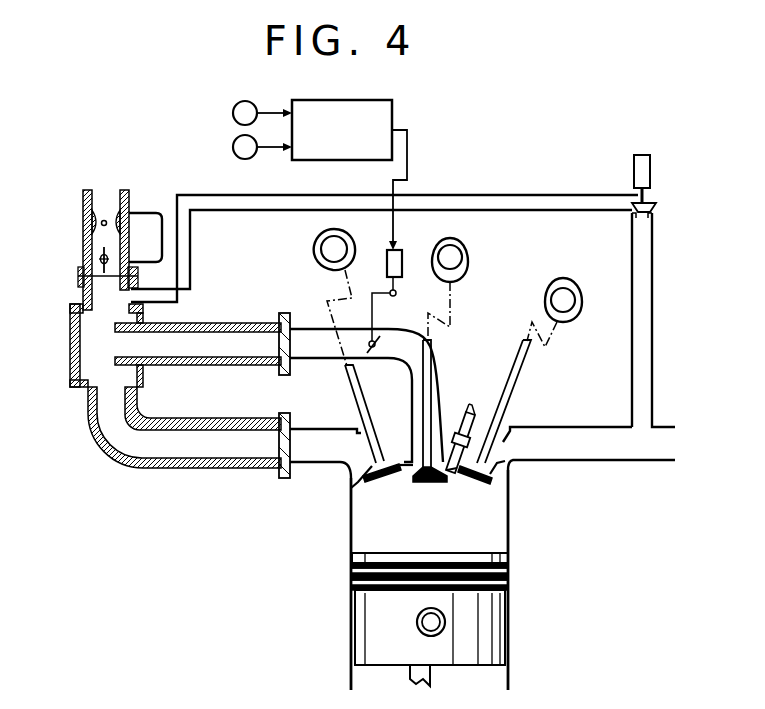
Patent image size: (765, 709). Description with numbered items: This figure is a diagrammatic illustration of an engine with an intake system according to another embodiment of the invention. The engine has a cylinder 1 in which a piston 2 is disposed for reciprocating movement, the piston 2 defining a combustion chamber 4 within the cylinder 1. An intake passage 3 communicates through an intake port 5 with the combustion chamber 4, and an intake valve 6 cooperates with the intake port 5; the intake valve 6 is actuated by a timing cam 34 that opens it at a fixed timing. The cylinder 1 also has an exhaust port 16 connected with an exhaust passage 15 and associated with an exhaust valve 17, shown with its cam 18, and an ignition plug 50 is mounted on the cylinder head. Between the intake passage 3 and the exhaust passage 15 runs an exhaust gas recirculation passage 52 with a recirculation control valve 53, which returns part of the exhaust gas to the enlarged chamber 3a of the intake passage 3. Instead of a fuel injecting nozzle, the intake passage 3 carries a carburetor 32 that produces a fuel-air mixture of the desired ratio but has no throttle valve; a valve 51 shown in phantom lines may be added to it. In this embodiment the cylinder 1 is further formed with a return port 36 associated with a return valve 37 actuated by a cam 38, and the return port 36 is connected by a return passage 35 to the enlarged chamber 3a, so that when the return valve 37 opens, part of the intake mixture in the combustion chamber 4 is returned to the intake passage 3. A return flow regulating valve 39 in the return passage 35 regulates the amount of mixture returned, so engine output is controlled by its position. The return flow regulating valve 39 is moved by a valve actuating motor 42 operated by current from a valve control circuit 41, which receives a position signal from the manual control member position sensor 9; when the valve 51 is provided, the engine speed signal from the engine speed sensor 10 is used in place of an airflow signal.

The cylinder 1 is at (342, 558).
The piston 2 is at (487, 624).
The intake passage 3 is at (177, 468).
The enlarged chamber 3a is at (90, 362).
The combustion chamber 4 is at (446, 544).
The intake port 5 is at (357, 470).
The intake valve 6 is at (392, 446).
The manual control member position sensor 9 is at (232, 147).
The engine speed sensor 10 is at (232, 111).
The exhaust passage 15 is at (588, 426).
The exhaust port 16 is at (496, 468).
The exhaust valve 17 is at (480, 483).
The exhaust valve cam 18 is at (581, 300).
The carburetor 32 is at (130, 205).
The timing cam 34 is at (313, 252).
The return passage 35 is at (250, 323).
The return port 36 is at (442, 440).
The return valve 37 is at (430, 483).
The cam 38 is at (468, 262).
The return flow regulating valve 39 is at (371, 356).
The valve control circuit 41 is at (358, 100).
The valve actuating motor 42 is at (387, 258).
The ignition plug 50 is at (476, 420).
The valve 51 is at (100, 257).
The exhaust gas recirculation passage 52 is at (497, 194).
The recirculation control valve 53 is at (657, 203).